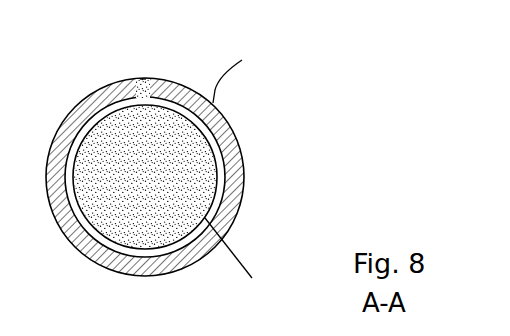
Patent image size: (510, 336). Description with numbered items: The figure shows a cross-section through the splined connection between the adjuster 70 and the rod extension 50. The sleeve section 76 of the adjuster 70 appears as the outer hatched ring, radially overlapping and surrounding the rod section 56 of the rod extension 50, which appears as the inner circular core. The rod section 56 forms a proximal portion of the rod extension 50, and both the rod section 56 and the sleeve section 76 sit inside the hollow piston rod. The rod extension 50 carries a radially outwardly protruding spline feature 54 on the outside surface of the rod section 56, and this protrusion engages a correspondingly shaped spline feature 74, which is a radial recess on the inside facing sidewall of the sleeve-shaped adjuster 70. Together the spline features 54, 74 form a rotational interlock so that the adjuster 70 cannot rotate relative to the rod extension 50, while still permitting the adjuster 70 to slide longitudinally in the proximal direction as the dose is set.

The rod extension 50 is at (207, 183).
The spline feature 54 is at (146, 79).
The rod section 56 is at (243, 259).
The adjuster 70 is at (237, 134).
The spline feature 74 is at (136, 79).
The sleeve section 76 is at (238, 71).